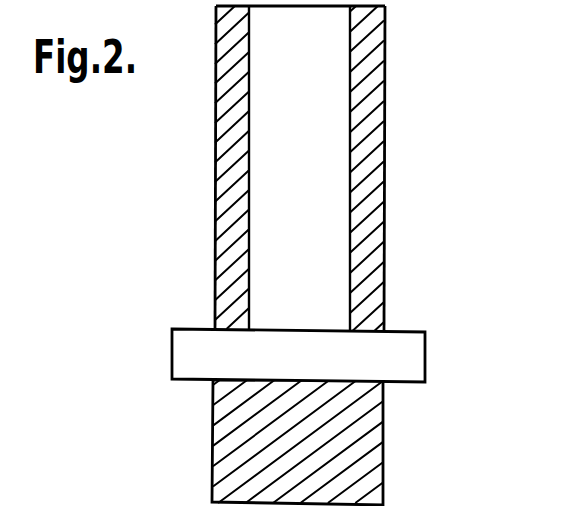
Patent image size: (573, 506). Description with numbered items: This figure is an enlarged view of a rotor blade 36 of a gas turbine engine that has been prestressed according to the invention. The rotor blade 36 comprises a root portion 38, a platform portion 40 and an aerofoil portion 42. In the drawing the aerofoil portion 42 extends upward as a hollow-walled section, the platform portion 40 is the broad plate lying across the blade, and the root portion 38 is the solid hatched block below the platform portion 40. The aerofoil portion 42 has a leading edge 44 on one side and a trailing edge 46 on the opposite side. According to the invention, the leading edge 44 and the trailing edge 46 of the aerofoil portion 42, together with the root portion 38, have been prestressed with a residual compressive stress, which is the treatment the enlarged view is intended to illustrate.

The rotor blade 36 is at (375, 197).
The root portion 38 is at (383, 442).
The platform portion 40 is at (425, 351).
The aerofoil portion 42 is at (368, 122).
The leading edge 44 is at (216, 160).
The trailing edge 46 is at (383, 263).